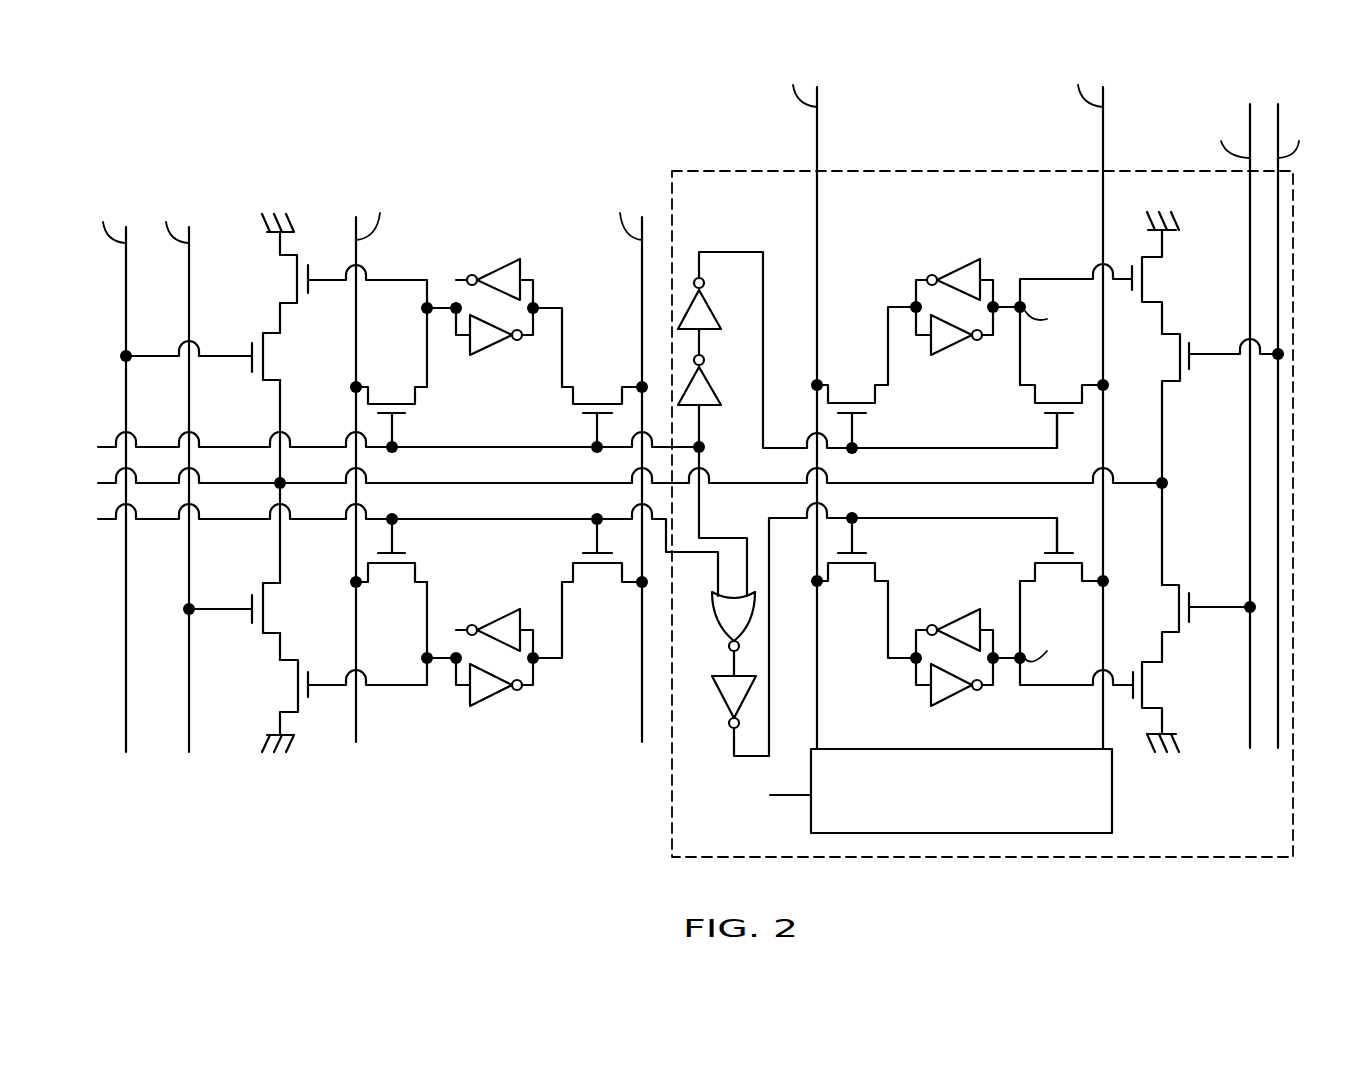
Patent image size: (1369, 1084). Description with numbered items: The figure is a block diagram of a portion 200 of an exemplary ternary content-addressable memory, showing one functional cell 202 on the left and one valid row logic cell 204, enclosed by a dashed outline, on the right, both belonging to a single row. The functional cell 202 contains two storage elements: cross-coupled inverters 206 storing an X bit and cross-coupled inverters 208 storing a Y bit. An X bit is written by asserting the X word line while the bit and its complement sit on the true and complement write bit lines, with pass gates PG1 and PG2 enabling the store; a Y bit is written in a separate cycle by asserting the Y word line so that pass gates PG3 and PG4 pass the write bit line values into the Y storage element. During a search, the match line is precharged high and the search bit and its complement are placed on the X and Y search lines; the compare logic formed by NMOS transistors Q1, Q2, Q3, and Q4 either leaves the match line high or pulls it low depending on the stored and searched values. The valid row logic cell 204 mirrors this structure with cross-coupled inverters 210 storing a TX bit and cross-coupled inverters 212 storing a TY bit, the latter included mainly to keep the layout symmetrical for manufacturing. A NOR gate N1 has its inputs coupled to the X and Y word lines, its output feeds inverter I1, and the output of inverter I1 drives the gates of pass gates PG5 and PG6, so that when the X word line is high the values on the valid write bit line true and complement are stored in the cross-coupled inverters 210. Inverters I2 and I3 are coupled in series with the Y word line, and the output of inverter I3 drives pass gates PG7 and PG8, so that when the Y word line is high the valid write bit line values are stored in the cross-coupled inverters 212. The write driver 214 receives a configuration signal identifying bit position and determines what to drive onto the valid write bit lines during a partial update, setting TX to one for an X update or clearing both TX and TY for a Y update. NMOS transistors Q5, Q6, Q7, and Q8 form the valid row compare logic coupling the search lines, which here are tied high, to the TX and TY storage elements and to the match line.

The portion 200 is at (522, 880).
The functional cell 202 is at (402, 118).
The valid row logic cell 204 is at (733, 846).
The cross-coupled inverters 206 is at (553, 680).
The cross-coupled inverters 208 is at (545, 275).
The cross-coupled inverters 210 is at (906, 694).
The cross-coupled inverters 212 is at (892, 278).
The write driver 214 is at (1112, 778).
The NMOS transistor Q1 is at (259, 689).
The NMOS transistor Q2 is at (238, 627).
The NMOS transistor Q3 is at (244, 374).
The NMOS transistor Q4 is at (261, 277).
The NMOS transistor Q5 is at (1198, 689).
The NMOS transistor Q6 is at (1206, 593).
The NMOS transistor Q7 is at (1198, 377).
The NMOS transistor Q8 is at (1191, 277).
The pass gate PG1 is at (439, 571).
The pass gate PG2 is at (560, 571).
The pass gate PG3 is at (434, 393).
The pass gate PG4 is at (557, 393).
The pass gate PG5 is at (899, 571).
The pass gate PG6 is at (1020, 571).
The pass gate PG7 is at (894, 393).
The pass gate PG8 is at (1017, 393).
The inverter I1 is at (716, 700).
The inverter I2 is at (724, 396).
The inverter I3 is at (725, 317).
The NOR gate N1 is at (712, 623).